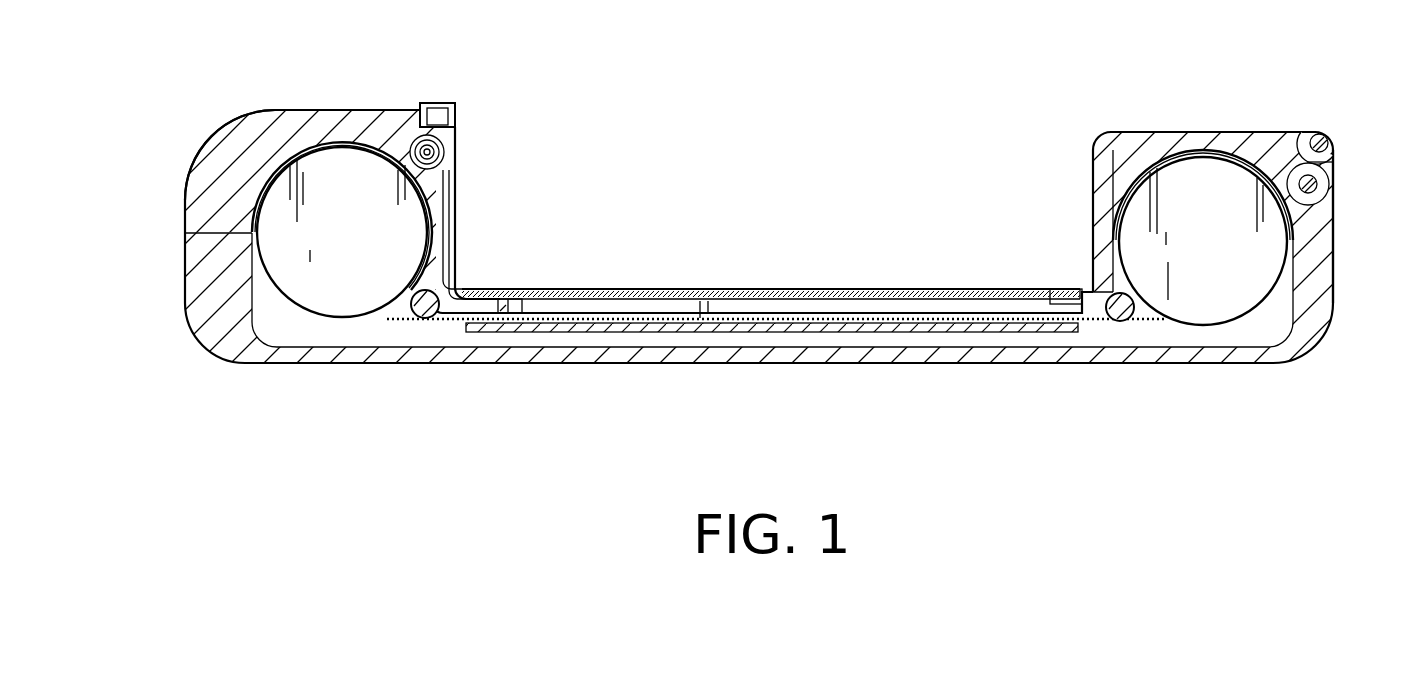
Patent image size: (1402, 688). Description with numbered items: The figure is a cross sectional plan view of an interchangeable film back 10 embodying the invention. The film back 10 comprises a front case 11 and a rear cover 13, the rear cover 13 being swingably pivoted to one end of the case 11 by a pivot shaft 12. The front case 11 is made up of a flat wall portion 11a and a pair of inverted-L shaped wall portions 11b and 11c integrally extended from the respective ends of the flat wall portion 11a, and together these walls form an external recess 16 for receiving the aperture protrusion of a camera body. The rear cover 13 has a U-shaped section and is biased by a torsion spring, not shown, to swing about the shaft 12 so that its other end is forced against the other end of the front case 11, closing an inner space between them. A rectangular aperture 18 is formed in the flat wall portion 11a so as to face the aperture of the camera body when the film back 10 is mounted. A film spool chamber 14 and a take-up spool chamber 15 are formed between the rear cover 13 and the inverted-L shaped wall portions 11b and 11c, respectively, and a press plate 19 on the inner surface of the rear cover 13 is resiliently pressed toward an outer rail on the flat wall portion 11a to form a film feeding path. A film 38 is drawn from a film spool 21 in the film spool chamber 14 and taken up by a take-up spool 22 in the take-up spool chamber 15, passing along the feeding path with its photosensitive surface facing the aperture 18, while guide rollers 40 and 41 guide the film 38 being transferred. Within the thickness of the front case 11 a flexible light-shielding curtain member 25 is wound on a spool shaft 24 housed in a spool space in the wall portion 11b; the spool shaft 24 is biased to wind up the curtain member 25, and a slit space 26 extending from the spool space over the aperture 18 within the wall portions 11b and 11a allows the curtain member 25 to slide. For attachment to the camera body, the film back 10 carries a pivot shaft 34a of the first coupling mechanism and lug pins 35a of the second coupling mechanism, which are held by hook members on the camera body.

The interchangeable film back 10 is at (106, 153).
The front case 11 is at (176, 190).
The flat wall portion 11a is at (786, 288).
The inverted-L shaped wall portion 11b is at (330, 72).
The inverted-L shaped wall portion 11c is at (1138, 131).
The pivot shaft 12 is at (1328, 201).
The rear cover 13 is at (207, 273).
The film spool chamber 14 is at (281, 189).
The take-up spool chamber 15 is at (1245, 171).
The external recess 16 is at (782, 175).
The rectangular aperture 18 is at (500, 299).
The press plate 19 is at (688, 333).
The film spool 21 is at (343, 288).
The take-up spool 22 is at (1239, 291).
The spool shaft 24 is at (444, 153).
The light-shielding curtain member 25 is at (446, 253).
The slit space 26 is at (953, 295).
The pivot shaft 34a is at (1328, 139).
The lug pins 35a is at (458, 74).
The film 38 is at (388, 321).
The guide roller 40 is at (428, 309).
The guide roller 41 is at (1122, 313).